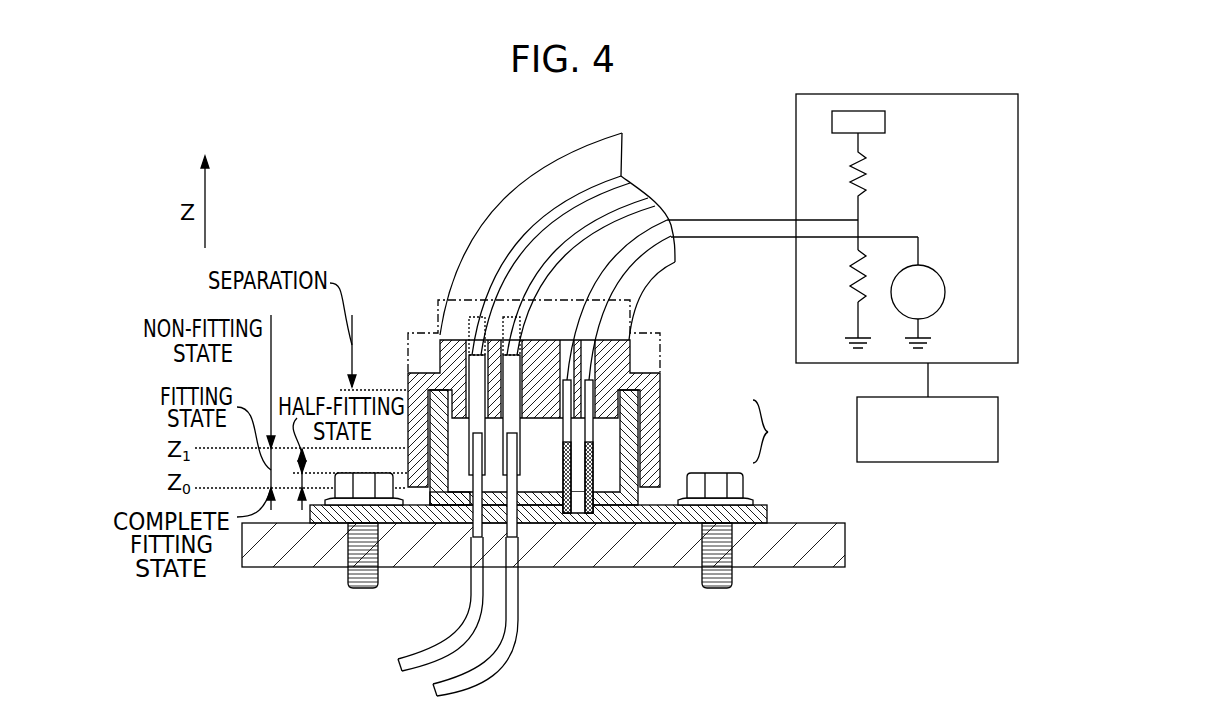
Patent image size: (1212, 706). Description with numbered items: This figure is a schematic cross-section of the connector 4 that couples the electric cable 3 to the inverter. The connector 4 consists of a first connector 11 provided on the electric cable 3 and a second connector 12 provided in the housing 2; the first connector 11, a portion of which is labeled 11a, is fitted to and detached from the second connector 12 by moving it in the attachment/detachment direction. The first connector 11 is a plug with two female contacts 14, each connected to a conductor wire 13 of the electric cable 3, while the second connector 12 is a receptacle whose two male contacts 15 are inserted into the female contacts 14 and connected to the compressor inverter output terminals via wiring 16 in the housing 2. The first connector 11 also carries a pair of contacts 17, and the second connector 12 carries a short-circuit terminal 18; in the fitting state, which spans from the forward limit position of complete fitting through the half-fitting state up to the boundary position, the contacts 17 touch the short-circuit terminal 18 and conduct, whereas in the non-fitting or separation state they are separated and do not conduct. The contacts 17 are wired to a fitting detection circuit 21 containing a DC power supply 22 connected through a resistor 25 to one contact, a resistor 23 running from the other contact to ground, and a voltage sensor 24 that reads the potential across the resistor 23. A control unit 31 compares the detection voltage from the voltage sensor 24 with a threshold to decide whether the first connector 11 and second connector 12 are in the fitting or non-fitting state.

The housing 2 is at (795, 522).
The electric cable 3 is at (555, 160).
The connector 4 is at (767, 431).
The first connector 11 is at (641, 447).
The housing bottom portion 11a is at (425, 512).
The second connector 12 is at (649, 497).
The conductor wire 13 is at (548, 230).
The female contacts 14 is at (512, 367).
The male contacts 15 is at (517, 532).
The wiring 16 is at (472, 672).
The pair of contacts 17 is at (567, 427).
The short-circuit terminal 18 is at (578, 515).
The fitting detection circuit 21 is at (796, 212).
The DC power supply 22 is at (832, 114).
The resistor 23 is at (845, 288).
The voltage sensor 24 is at (943, 288).
The resistor 25 is at (871, 187).
The control unit 31 is at (925, 462).